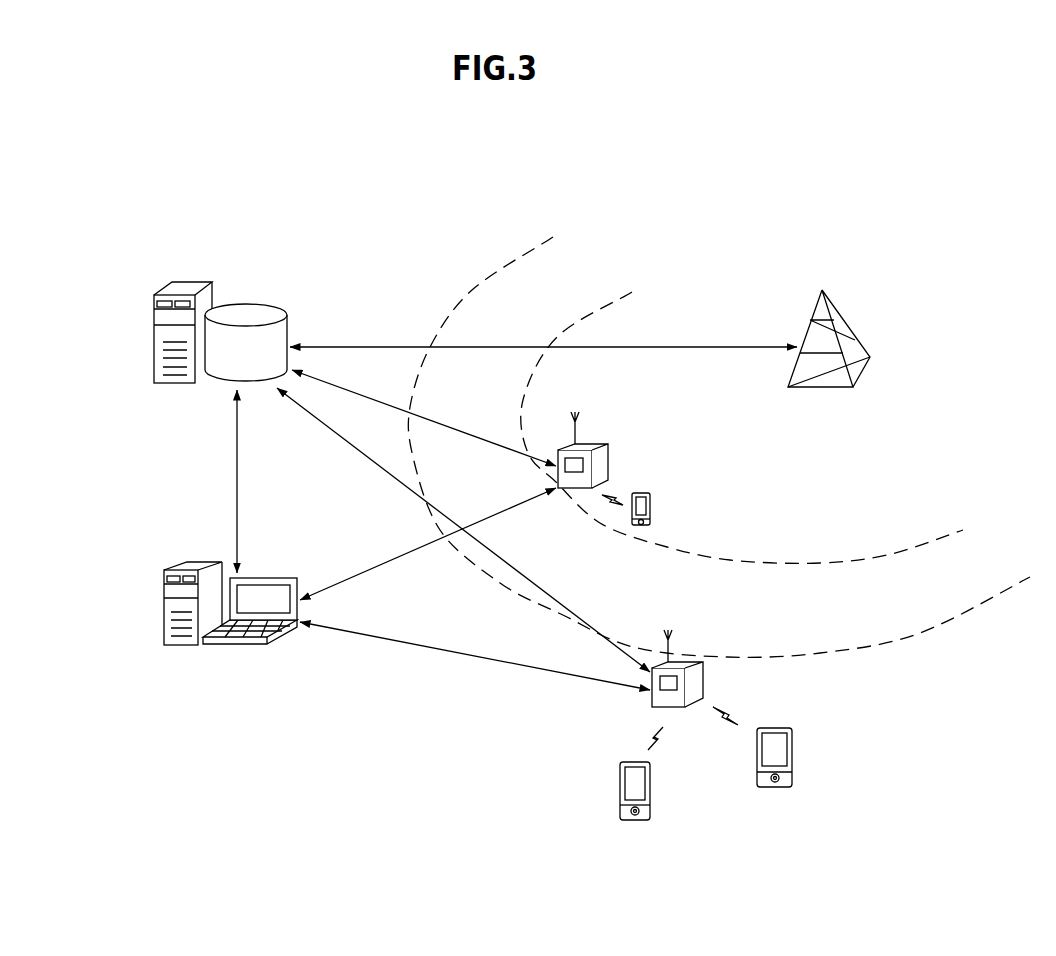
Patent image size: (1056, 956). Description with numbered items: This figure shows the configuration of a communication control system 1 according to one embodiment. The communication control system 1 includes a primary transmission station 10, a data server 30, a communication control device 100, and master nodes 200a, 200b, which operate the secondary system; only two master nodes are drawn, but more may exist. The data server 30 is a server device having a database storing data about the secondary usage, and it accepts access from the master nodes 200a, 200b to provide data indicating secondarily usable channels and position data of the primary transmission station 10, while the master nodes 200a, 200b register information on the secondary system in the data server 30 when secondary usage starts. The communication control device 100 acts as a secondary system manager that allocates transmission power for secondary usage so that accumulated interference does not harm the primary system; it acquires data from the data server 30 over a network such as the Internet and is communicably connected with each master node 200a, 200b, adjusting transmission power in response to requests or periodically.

The communication control system 1 is at (697, 162).
The primary transmission station 10 is at (835, 314).
The data server 30 is at (200, 286).
The communication control device 100 is at (257, 578).
The master node 200a is at (690, 665).
The master node 200b is at (612, 460).